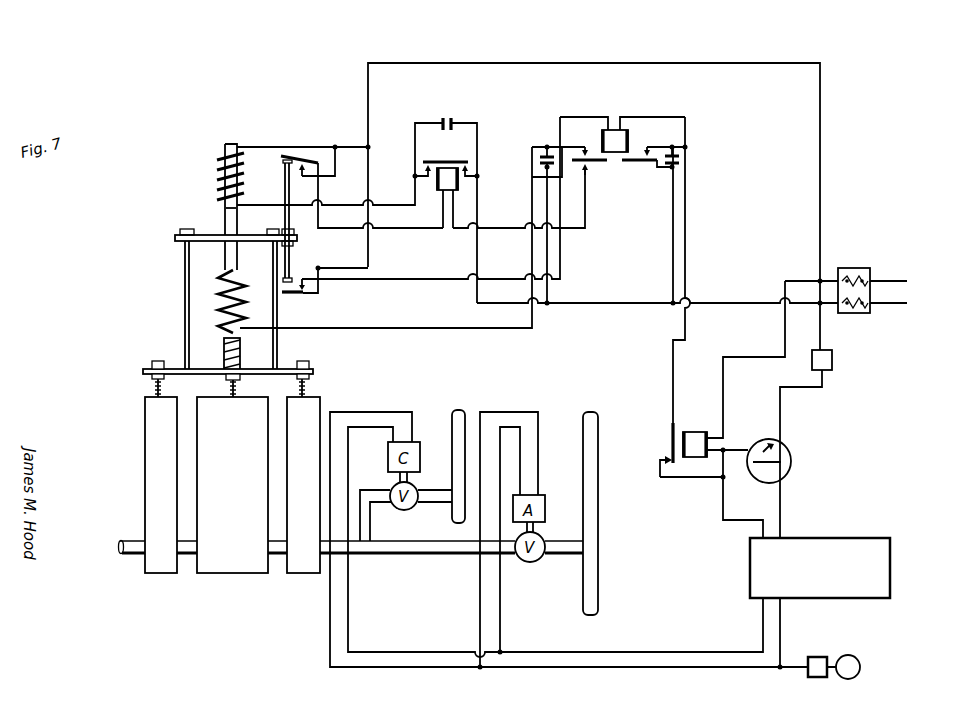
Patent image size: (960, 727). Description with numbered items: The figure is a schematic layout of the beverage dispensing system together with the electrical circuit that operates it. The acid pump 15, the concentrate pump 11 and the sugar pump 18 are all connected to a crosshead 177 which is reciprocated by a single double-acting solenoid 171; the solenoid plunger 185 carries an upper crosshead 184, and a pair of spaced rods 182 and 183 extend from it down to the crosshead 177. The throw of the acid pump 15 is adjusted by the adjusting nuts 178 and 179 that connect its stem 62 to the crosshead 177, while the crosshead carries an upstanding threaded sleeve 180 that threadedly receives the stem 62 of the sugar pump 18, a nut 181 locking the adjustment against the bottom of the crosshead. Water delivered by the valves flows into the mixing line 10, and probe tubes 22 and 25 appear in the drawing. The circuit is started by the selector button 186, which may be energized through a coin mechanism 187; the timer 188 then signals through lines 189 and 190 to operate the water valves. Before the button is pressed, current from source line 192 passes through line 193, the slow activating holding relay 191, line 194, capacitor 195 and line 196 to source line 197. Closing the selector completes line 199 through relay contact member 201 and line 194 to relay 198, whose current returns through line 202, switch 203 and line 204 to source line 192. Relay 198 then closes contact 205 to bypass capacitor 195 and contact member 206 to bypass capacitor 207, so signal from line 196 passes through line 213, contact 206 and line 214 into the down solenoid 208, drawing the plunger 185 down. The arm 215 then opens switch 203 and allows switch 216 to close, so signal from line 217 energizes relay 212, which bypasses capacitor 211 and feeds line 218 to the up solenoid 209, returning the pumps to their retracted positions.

The mixing line 10 is at (130, 545).
The concentrate pump 11 is at (310, 470).
The acid pump 15 is at (144, 448).
The sugar pump 18 is at (242, 470).
The probe tube 22 is at (458, 408).
The probe tube 25 is at (598, 495).
The stem 62 is at (155, 386).
The double-acting solenoid 171 is at (218, 186).
The crosshead 177 is at (296, 362).
The adjusting nut 178 is at (150, 364).
The adjusting nut 179 is at (150, 372).
The upstanding threaded sleeve 180 is at (222, 342).
The nut 181 is at (222, 378).
The spaced rod 182 is at (185, 263).
The spaced rod 183 is at (278, 313).
The upper crosshead 184 is at (207, 234).
The plunger 185 is at (226, 218).
The selector button 186 is at (793, 470).
The coin mechanism 187 is at (836, 362).
The timer 188 is at (880, 545).
The line 189 is at (783, 626).
The line 190 is at (762, 614).
The slow activating holding relay 191 is at (667, 447).
The source line 192 is at (880, 278).
The line 193 is at (748, 356).
The line 194 is at (688, 115).
The capacitor 195 is at (680, 160).
The line 196 is at (730, 300).
The source line 197 is at (885, 304).
The relay 198 is at (618, 115).
The line 199 is at (717, 493).
The relay contact member 201 is at (681, 425).
The line 202 is at (428, 280).
The switch 203 is at (320, 293).
The line 204 is at (427, 60).
The contact 205 is at (633, 165).
The contact member 206 is at (600, 165).
The capacitor 207 is at (545, 145).
The down solenoid 208 is at (215, 305).
The up solenoid 209 is at (222, 153).
The capacitor 211 is at (448, 117).
The relay 212 is at (410, 158).
The line 213 is at (536, 176).
The line 214 is at (531, 205).
The arm 215 is at (293, 254).
The switch 216 is at (307, 152).
The line 217 is at (583, 232).
The line 218 is at (386, 204).